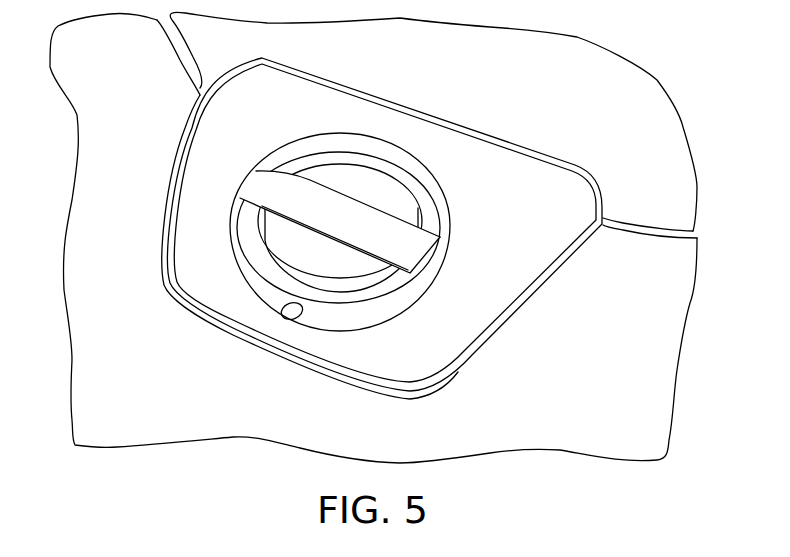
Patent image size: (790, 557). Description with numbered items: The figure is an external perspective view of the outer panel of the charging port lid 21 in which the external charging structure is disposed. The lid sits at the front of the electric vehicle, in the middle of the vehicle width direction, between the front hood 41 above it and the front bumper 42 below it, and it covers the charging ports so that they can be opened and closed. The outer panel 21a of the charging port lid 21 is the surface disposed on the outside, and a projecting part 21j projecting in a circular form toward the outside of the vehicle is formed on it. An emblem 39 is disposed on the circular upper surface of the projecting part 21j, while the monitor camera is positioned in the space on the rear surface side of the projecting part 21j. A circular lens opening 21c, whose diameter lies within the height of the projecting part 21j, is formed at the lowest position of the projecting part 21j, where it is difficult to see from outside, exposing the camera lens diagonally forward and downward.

The front hood 41 is at (525, 65).
The front bumper 42 is at (232, 417).
The charging port lid 21 is at (400, 108).
The outer panel 21a is at (513, 186).
The projecting part 21j is at (383, 195).
The lens opening 21c is at (292, 311).
The emblem 39 is at (290, 190).